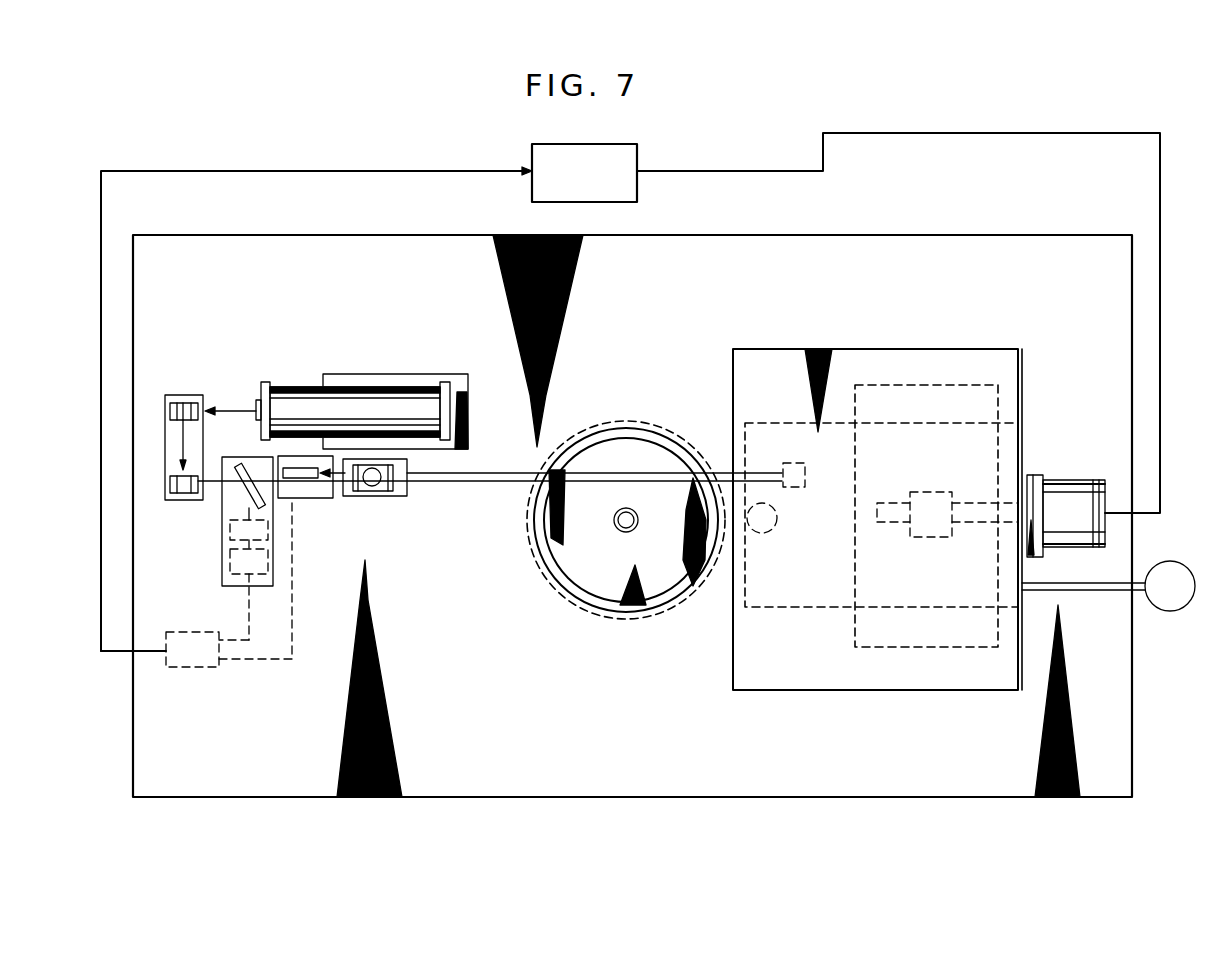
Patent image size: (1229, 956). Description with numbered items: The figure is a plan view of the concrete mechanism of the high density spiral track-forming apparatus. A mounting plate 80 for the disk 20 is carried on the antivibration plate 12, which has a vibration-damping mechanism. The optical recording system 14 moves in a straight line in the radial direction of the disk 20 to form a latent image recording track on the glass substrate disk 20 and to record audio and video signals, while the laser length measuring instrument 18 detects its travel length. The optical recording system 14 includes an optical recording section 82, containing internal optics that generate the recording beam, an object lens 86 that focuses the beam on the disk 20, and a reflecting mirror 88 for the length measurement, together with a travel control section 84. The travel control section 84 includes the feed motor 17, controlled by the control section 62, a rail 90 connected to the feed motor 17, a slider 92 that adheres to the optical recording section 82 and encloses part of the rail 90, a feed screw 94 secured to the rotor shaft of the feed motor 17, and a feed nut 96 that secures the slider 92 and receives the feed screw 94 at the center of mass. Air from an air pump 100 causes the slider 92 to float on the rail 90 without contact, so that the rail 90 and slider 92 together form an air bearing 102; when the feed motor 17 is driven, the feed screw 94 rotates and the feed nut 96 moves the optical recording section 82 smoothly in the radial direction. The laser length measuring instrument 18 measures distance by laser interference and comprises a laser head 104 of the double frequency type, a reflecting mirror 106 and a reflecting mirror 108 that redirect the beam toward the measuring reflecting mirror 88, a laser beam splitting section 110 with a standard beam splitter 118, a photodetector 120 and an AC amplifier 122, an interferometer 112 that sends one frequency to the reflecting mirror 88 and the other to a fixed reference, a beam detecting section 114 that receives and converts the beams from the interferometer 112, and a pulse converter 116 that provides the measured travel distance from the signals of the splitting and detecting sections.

The antivibration plate 12 is at (1008, 238).
The optical recording system 14 is at (983, 322).
The feed motor 17 is at (1087, 486).
The laser length measuring instrument 18 is at (268, 380).
The disk 20 is at (633, 418).
The control section 62 is at (571, 186).
The mounting plate 80 is at (572, 568).
The optical recording section 82 is at (1018, 349).
The travel control section 84 is at (1040, 470).
The object lens 86 is at (763, 533).
The reflecting mirror 88 is at (805, 487).
The rail 90 is at (782, 421).
The slider 92 is at (940, 383).
The feed screw 94 is at (978, 524).
The feed nut 96 is at (930, 539).
The air pump 100 is at (1179, 562).
The air bearing 102 is at (746, 610).
The laser head 104 is at (313, 392).
The reflecting mirror 106 is at (183, 403).
The reflecting mirror 108 is at (180, 497).
The laser beam splitting section 110 is at (232, 585).
The interferometer 112 is at (372, 489).
The beam detecting section 114 is at (301, 480).
The pulse converter 116 is at (213, 668).
The standard beam splitter 118 is at (238, 462).
The photodetector 120 is at (226, 534).
The AC amplifier 122 is at (224, 566).